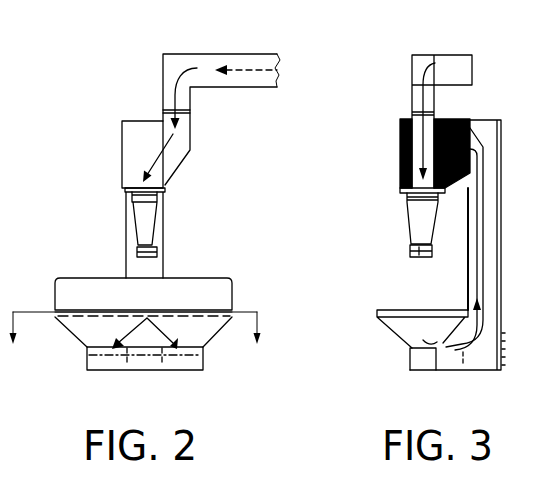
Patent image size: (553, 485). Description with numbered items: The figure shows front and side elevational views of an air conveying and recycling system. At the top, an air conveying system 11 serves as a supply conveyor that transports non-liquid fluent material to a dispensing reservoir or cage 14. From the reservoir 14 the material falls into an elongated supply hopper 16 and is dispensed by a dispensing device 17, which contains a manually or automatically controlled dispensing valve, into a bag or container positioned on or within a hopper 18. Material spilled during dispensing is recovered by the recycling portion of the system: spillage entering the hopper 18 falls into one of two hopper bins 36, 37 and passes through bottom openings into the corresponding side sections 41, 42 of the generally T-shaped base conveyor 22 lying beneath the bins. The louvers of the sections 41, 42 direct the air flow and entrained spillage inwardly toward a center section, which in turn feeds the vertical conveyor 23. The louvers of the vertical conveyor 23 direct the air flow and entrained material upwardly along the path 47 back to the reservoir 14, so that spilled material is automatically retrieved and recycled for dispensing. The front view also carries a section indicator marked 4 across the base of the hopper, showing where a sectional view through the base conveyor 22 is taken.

In FIG. 2, the air conveying system 11 is at (210, 54).
In FIG. 3, the air conveying system 11 is at (481, 69).
In FIG. 2, the dispensing reservoir 14 is at (122, 162).
In FIG. 3, the dispensing reservoir 14 is at (400, 155).
In FIG. 2, the supply hopper 16 is at (132, 213).
In FIG. 3, the supply hopper 16 is at (410, 213).
In FIG. 2, the dispensing device 17 is at (137, 253).
In FIG. 3, the dispensing device 17 is at (410, 252).
In FIG. 2, the vertical conveyor 23 is at (164, 233).
In FIG. 3, the vertical conveyor 23 is at (500, 262).
In FIG. 2, the hopper bin 36 is at (212, 335).
In FIG. 2, the hopper bin 37 is at (74, 335).
In FIG. 2, the conveyor section 41 is at (192, 371).
In FIG. 2, the conveyor section 42 is at (103, 371).
In FIG. 2, the base conveyor 22 is at (147, 377).
In FIG. 3, the base conveyor 22 is at (456, 377).
In FIG. 2, the section line 4- 4 is at (146, 328).
In FIG. 3, the hopper 18 is at (410, 302).
In FIG. 3, the path 47 is at (484, 211).